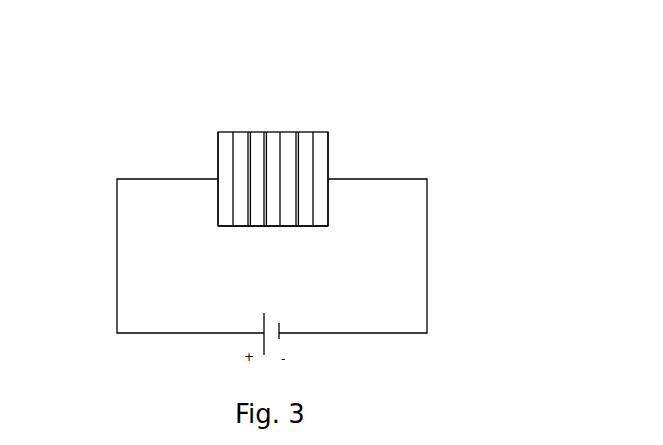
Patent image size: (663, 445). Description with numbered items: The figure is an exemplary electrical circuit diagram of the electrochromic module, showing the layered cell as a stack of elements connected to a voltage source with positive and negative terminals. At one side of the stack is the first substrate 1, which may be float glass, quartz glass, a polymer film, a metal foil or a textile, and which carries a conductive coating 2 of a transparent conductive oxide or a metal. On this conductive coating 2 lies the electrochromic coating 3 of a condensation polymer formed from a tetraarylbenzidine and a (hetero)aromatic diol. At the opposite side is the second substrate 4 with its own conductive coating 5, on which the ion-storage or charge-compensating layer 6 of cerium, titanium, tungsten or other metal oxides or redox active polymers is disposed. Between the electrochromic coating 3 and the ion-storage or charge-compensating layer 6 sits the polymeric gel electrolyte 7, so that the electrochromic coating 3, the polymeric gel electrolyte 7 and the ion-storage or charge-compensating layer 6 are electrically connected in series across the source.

The first substrate 1 is at (225, 132).
The conductive coating 2 is at (242, 132).
The electrochromic coating 3 is at (257, 226).
The second substrate 4 is at (317, 132).
The conductive coating 5 is at (305, 132).
The ion-storage or charge-compensating layer 6 is at (288, 226).
The polymeric gel electrolyte 7 is at (272, 132).